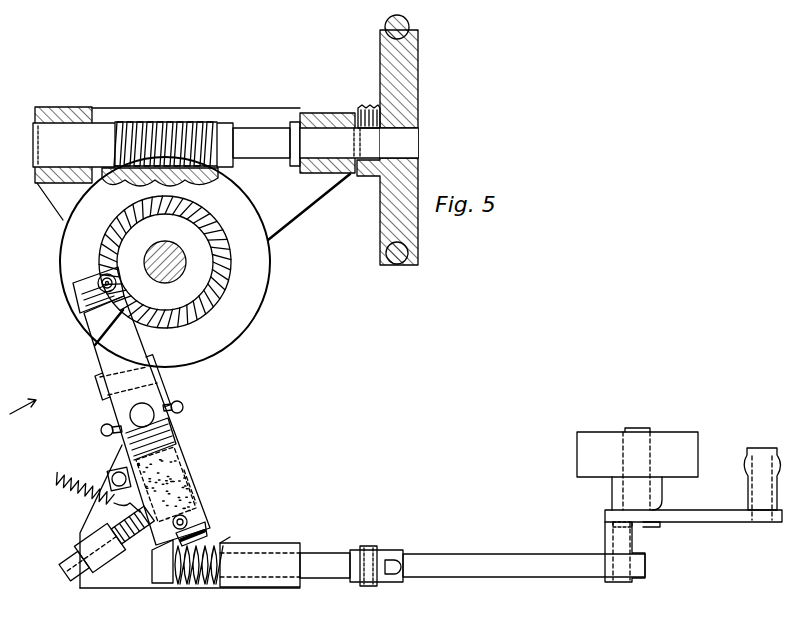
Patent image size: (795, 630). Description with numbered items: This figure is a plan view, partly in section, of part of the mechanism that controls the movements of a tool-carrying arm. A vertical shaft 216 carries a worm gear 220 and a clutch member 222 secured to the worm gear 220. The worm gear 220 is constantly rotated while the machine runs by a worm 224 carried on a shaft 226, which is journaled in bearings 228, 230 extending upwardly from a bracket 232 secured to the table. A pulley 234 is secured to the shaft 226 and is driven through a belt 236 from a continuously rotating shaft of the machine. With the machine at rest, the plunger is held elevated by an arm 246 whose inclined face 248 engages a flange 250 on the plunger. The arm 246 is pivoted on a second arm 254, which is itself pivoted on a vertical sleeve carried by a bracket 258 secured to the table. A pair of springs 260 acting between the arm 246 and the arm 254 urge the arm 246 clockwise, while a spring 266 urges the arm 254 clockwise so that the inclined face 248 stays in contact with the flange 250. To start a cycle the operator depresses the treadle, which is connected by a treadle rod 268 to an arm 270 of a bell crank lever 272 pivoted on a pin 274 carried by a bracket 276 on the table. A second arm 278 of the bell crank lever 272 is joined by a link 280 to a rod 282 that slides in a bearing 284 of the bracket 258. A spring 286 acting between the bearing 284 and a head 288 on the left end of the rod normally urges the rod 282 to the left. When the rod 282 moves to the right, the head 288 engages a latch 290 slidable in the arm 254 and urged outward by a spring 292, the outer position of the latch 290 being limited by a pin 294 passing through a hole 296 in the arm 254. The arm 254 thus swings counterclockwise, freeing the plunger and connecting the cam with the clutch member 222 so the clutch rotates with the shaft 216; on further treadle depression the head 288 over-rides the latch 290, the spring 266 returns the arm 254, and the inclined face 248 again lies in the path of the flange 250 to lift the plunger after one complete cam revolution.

The vertical shaft 216 is at (172, 265).
The worm gear 220 is at (268, 302).
The clutch member 222 is at (220, 306).
The worm 224 is at (137, 120).
The shaft 226 is at (314, 128).
The bearing 228 is at (345, 96).
The bearing 230 is at (56, 108).
The bracket 232 is at (222, 96).
The pulley 234 is at (418, 92).
The belt 236 is at (400, 263).
The arm 246 is at (92, 346).
The inclined face 248 is at (54, 625).
The flange 250 is at (96, 284).
The arm 254 is at (182, 440).
The bracket 258 is at (122, 582).
The springs 260 is at (101, 430).
The spring 266 is at (74, 492).
The treadle rod 268 is at (768, 438).
The arm 270 is at (693, 538).
The bell crank lever 272 is at (664, 497).
The pin 274 is at (652, 438).
The bracket 276 is at (698, 436).
The second arm 278 is at (605, 541).
The link 280 is at (512, 577).
The rod 282 is at (335, 552).
The bearing 284 is at (266, 588).
The spring 286 is at (232, 537).
The head 288 is at (165, 578).
The latch 290 is at (198, 521).
The spring 292 is at (196, 462).
The pin 294 is at (190, 512).
The hole 296 is at (198, 484).